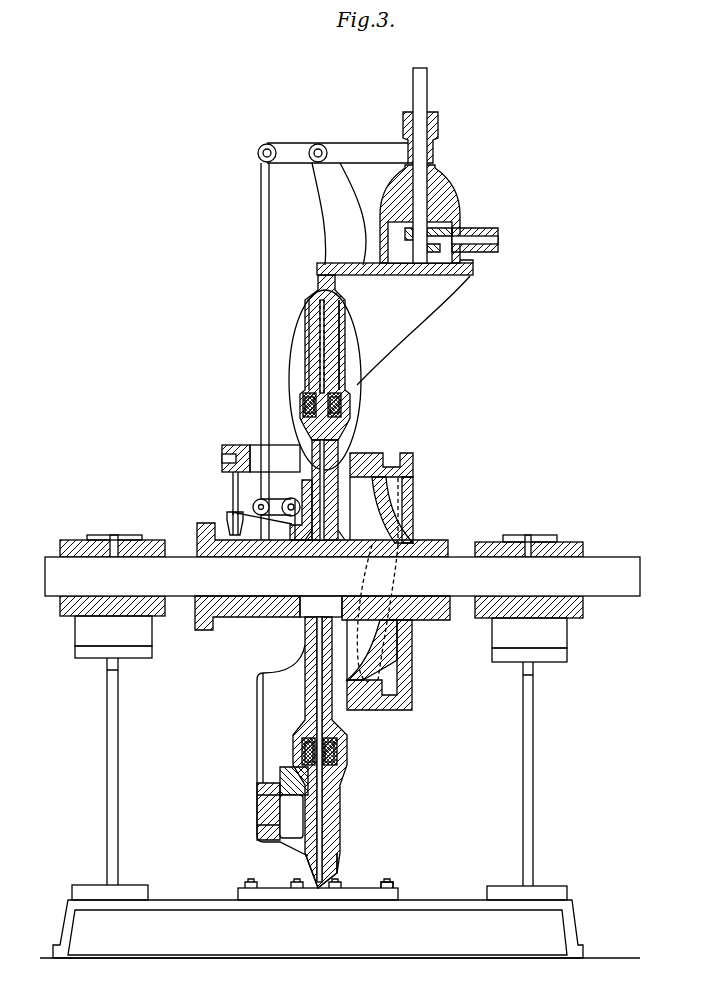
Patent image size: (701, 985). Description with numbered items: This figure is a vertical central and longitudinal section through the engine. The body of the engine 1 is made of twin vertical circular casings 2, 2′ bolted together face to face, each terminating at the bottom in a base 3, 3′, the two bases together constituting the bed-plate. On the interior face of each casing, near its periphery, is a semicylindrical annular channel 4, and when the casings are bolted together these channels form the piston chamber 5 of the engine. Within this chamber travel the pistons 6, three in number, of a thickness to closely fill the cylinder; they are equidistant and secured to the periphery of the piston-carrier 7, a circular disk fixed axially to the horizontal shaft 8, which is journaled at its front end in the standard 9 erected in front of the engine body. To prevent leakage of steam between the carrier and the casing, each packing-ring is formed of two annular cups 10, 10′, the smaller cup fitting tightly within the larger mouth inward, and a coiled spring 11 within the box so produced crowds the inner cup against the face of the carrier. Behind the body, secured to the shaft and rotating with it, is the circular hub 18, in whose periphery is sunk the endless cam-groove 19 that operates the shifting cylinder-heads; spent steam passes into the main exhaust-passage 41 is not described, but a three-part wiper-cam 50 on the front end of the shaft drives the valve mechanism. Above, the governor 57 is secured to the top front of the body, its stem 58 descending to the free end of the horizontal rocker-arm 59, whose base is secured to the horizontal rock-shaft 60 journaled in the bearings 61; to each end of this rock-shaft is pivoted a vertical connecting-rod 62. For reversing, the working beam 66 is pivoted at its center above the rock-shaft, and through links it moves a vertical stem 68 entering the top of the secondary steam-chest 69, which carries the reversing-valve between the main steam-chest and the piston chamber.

The body of the engine 1 is at (302, 752).
The circular casing 2 is at (323, 357).
The circular casing 2′ is at (346, 345).
The base 3 is at (318, 887).
The base 3′ is at (373, 882).
The semicylindrical annular channel 4 is at (310, 850).
The piston chamber 5 is at (319, 817).
The piston 6 is at (325, 380).
The piston-carrier 7 is at (335, 447).
The horizontal shaft 8 is at (342, 576).
The standard 9 is at (321, 710).
The larger annular cup 10 is at (340, 399).
The smaller annular cup 10′ is at (341, 410).
The coiled spring 11 is at (248, 398).
The circular hub 18 is at (361, 509).
The endless cam-groove 19 is at (393, 462).
The nozzle tip 41 is at (322, 856).
The three-part wiper-cam 50 is at (322, 535).
The governor 57 is at (407, 171).
The governor stem 58 is at (329, 341).
The horizontal rocker-arm 59 is at (276, 507).
The horizontal rock-shaft 60 is at (292, 510).
The bearing 61 is at (285, 498).
The vertical connecting-rod 62 is at (245, 512).
The working beam 66 is at (232, 447).
The vertical stem 68 is at (241, 526).
The secondary steam-chest 69 is at (242, 493).